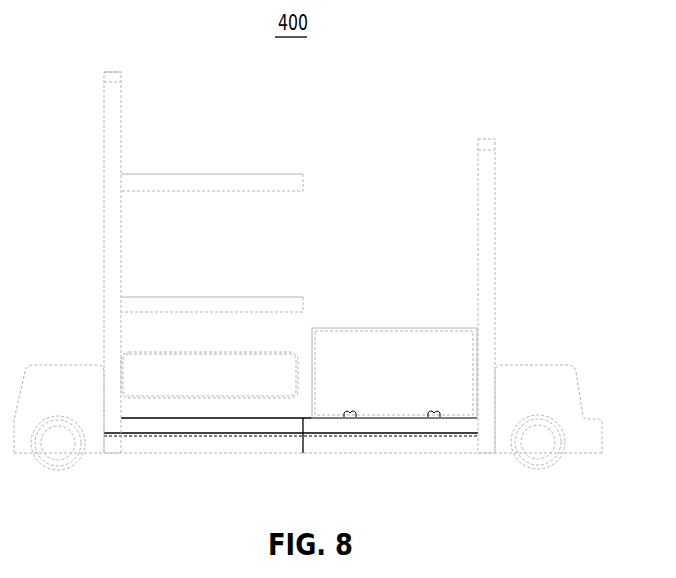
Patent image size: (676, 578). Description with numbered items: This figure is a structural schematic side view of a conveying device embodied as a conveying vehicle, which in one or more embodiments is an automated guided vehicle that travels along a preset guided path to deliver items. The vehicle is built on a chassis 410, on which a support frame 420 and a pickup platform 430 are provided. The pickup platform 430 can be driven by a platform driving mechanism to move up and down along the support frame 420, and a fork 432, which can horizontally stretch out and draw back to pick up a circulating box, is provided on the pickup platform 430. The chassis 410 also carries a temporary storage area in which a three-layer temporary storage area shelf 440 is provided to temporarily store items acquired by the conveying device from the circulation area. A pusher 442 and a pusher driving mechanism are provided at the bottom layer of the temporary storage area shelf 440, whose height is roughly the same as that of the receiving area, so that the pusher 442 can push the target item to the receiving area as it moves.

The chassis 410 is at (265, 444).
The support frame 420 is at (493, 265).
The pickup platform 430 is at (385, 427).
The fork 432 is at (350, 415).
The temporary storage area shelf 440 is at (155, 305).
The pusher 442 is at (155, 370).